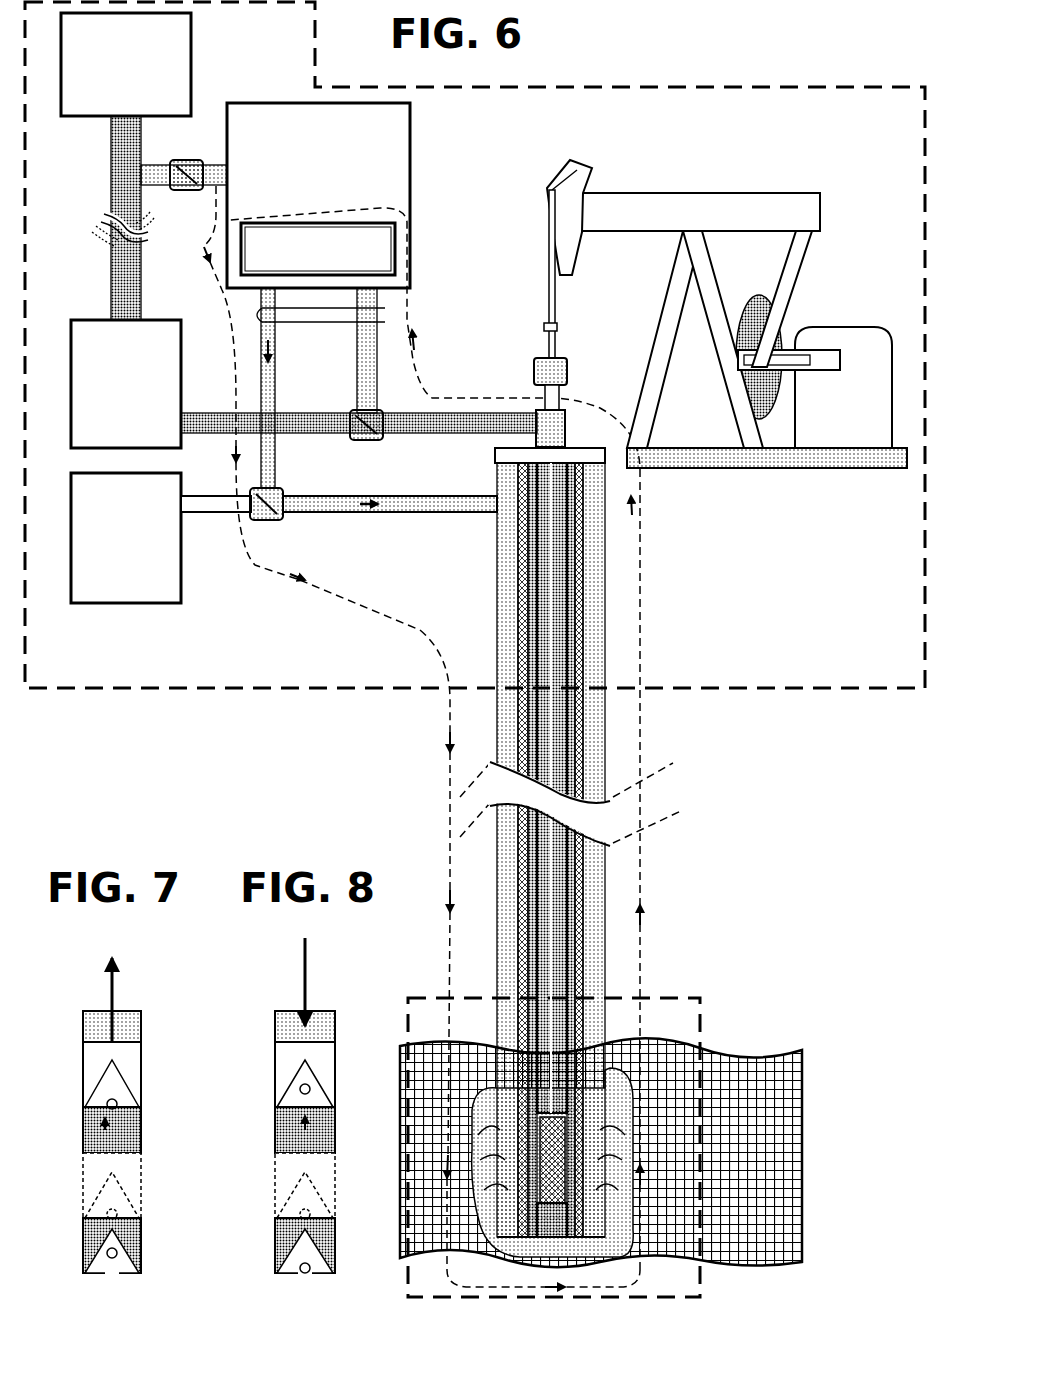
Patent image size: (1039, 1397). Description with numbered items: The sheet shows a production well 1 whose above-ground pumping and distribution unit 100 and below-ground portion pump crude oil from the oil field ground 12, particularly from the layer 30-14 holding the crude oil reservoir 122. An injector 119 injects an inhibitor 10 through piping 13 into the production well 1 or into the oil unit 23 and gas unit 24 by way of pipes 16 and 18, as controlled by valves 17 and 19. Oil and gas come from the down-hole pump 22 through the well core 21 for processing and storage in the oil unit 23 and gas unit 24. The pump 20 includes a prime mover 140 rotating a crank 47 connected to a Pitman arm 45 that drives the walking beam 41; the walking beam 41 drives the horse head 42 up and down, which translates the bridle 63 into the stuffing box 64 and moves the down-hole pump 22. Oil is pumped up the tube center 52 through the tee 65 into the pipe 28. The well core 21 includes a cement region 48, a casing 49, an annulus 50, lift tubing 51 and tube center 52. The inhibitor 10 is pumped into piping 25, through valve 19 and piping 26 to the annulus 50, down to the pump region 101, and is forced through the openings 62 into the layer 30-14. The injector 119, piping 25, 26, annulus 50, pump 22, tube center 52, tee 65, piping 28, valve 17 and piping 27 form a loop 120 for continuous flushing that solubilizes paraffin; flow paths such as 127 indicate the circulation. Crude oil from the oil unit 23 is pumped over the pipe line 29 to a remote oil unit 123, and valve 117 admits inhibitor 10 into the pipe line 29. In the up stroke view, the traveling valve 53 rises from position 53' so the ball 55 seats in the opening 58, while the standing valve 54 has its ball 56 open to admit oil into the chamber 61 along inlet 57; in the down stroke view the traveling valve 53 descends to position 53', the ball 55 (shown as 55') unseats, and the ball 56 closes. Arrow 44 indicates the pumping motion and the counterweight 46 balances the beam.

In FIG. 6, the production well 1 is at (756, 64).
In FIG. 6, the inhibitor 10 is at (390, 248).
In FIG. 6, the oil field ground 12 is at (797, 795).
In FIG. 6, the piping 13 is at (387, 318).
In FIG. 6, the pipe 16 is at (252, 418).
In FIG. 6, the valve 17 is at (385, 420).
In FIG. 6, the pipe 18 is at (210, 512).
In FIG. 6, the valve 19 is at (285, 500).
In FIG. 6, the pump 20 is at (818, 292).
In FIG. 6, the well core 21 is at (480, 605).
In FIG. 6, the down-hole pump 22 is at (668, 1090).
In FIG. 7, the down-hole pump 22 is at (93, 1020).
In FIG. 8, the down-hole pump 22 is at (289, 1020).
In FIG. 6, the oil unit 23 is at (97, 340).
In FIG. 6, the gas unit 24 is at (170, 555).
In FIG. 6, the piping 25 is at (263, 372).
In FIG. 6, the piping 26 is at (358, 517).
In FIG. 6, the piping 27 is at (378, 305).
In FIG. 6, the pipe 28 is at (417, 419).
In FIG. 6, the pipe line 29 is at (120, 183).
In FIG. 6, the layer 30-14 is at (826, 1178).
In FIG. 6, the walking beam 41 is at (638, 205).
In FIG. 6, the horse head 42 is at (580, 160).
In FIG. 6, the pumping motion 44 is at (658, 290).
In FIG. 6, the Pitman arm 45 is at (790, 270).
In FIG. 6, the counterweight 46 is at (783, 336).
In FIG. 6, the crank 47 is at (828, 362).
In FIG. 6, the cement region 48 is at (592, 500).
In FIG. 6, the casing 49 is at (578, 537).
In FIG. 6, the annulus 50 is at (572, 590).
In FIG. 6, the lift tubing 51 is at (565, 630).
In FIG. 6, the tube center 52 is at (612, 720).
In FIG. 7, the traveling valve 53 is at (78, 1033).
In FIG. 8, the traveling valve 53 is at (283, 1033).
In FIG. 7, the traveling valve position 53' is at (78, 1185).
In FIG. 8, the traveling valve position 53' is at (282, 1185).
In FIG. 7, the standing valve 54 is at (87, 1267).
In FIG. 8, the standing valve 54 is at (293, 1255).
In FIG. 7, the ball 55 is at (138, 1084).
In FIG. 8, the ball 55 is at (323, 1083).
In FIG. 7, the ball position 55' is at (140, 1195).
In FIG. 8, the ball position 55' is at (325, 1195).
In FIG. 7, the ball 56 is at (114, 1255).
In FIG. 8, the ball 56 is at (309, 1267).
In FIG. 7, the fluid inlet flow 57 is at (108, 1280).
In FIG. 8, the fluid inlet flow 57 is at (305, 1282).
In FIG. 7, the opening 58 is at (102, 1126).
In FIG. 8, the opening 58 is at (298, 1127).
In FIG. 7, the chamber 61 is at (87, 1116).
In FIG. 8, the chamber 61 is at (282, 1122).
In FIG. 6, the openings 62 is at (640, 1270).
In FIG. 6, the bridle 63 is at (548, 300).
In FIG. 6, the stuffing box 64 is at (567, 374).
In FIG. 6, the tee 65 is at (566, 425).
In FIG. 6, the pumping and distribution unit 100 is at (548, 87).
In FIG. 6, the pump region 101 is at (663, 998).
In FIG. 6, the valve 117 is at (193, 160).
In FIG. 6, the injector 119 is at (412, 145).
In FIG. 6, the loop 120 is at (447, 778).
In FIG. 6, the crude oil reservoir 122 is at (770, 1057).
In FIG. 6, the remote oil unit 123 is at (186, 68).
In FIG. 6, the inhibitor flow path 127 is at (214, 236).
In FIG. 6, the prime mover 140 is at (857, 410).